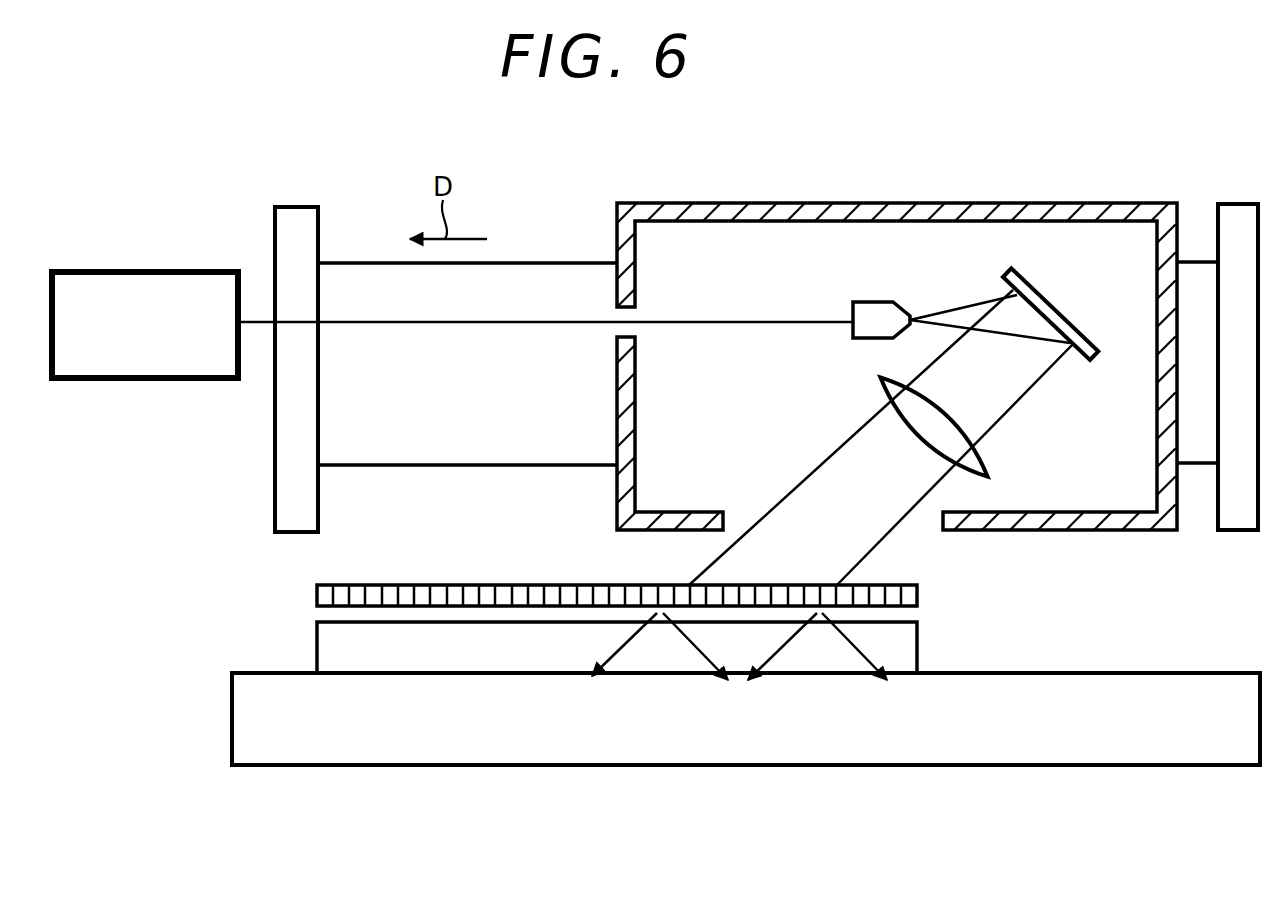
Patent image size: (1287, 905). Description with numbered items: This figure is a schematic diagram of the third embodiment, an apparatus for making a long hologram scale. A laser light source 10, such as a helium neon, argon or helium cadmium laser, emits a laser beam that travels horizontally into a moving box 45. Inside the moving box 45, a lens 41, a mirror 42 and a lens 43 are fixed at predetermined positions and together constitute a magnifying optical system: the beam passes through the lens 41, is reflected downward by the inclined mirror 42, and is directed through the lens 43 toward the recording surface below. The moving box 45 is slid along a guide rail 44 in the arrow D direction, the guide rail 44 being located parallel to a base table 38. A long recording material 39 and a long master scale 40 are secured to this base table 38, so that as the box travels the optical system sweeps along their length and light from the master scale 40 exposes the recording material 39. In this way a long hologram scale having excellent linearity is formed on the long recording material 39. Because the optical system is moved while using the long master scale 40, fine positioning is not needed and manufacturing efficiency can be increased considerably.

The laser light source 10 is at (147, 270).
The base table 38 is at (1040, 752).
The long recording material 39 is at (330, 645).
The long master scale 40 is at (920, 597).
The lens 41 is at (878, 302).
The mirror 42 is at (1060, 300).
The lens 43 is at (990, 462).
The guide rail 44 is at (362, 280).
The moving box 45 is at (785, 203).